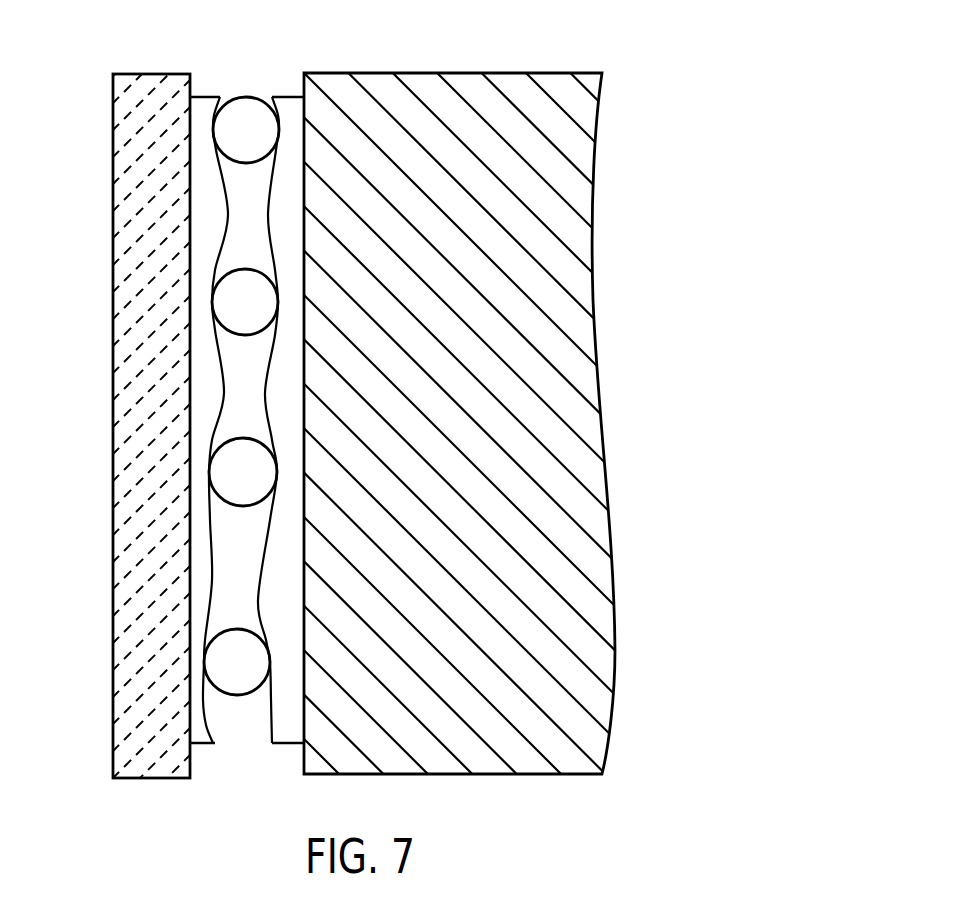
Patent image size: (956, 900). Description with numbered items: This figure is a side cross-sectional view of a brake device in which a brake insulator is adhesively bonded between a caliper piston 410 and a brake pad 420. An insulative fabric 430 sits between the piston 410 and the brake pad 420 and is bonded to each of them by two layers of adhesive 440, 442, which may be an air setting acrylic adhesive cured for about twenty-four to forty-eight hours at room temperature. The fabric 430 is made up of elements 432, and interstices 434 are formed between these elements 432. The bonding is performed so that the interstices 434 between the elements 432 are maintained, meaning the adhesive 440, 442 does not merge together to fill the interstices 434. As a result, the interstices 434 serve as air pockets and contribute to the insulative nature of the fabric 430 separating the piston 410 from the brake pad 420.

The caliper piston 410 is at (458, 85).
The brake pad 420 is at (152, 88).
The insulative fabric 430 is at (168, 376).
The elements of fabric 432 is at (232, 303).
The interstices 434 is at (238, 382).
The adhesive 440 is at (288, 732).
The adhesive 442 is at (198, 732).